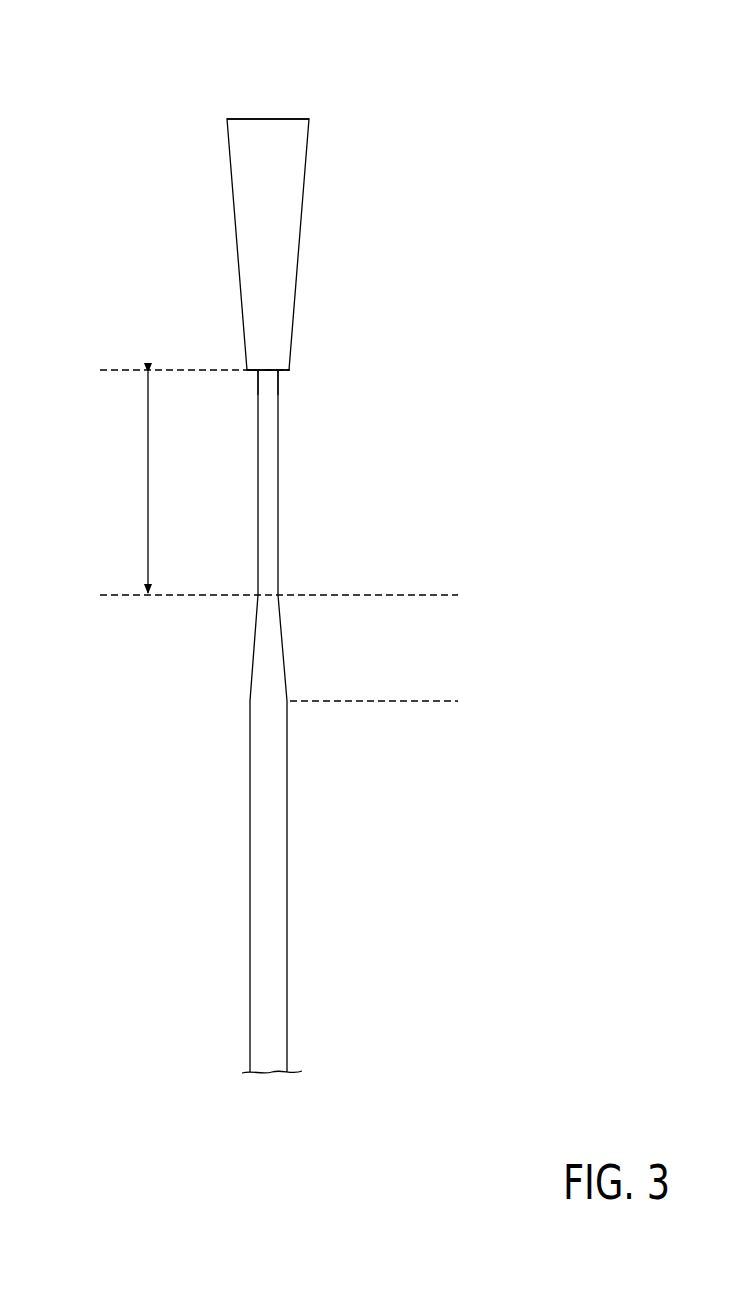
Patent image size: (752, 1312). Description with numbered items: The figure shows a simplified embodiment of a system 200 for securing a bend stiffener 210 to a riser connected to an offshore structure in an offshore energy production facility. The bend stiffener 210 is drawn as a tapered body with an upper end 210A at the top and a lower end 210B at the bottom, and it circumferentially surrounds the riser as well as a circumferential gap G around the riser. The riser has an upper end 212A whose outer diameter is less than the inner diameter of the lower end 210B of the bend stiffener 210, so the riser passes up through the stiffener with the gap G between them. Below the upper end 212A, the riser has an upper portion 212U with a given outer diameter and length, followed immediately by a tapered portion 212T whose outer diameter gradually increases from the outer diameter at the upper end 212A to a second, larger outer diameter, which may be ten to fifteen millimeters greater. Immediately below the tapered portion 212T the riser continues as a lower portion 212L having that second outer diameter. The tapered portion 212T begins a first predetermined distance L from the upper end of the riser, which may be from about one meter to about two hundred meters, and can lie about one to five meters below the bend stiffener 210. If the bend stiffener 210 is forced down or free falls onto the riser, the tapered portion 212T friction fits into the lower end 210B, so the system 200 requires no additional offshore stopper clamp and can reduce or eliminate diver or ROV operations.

The system 200 is at (122, 123).
The bend stiffener 210 is at (303, 225).
The upper end of bend stiffener 210A is at (309, 125).
The lower end of bend stiffener 210B is at (291, 357).
The upper end of riser 212A is at (279, 402).
The upper portion of riser 212U is at (279, 462).
The tapered portion of riser 212T is at (320, 659).
The lower portion of riser 212L is at (320, 835).
The circumferential gap G is at (257, 372).
The first predetermined distance L is at (139, 482).